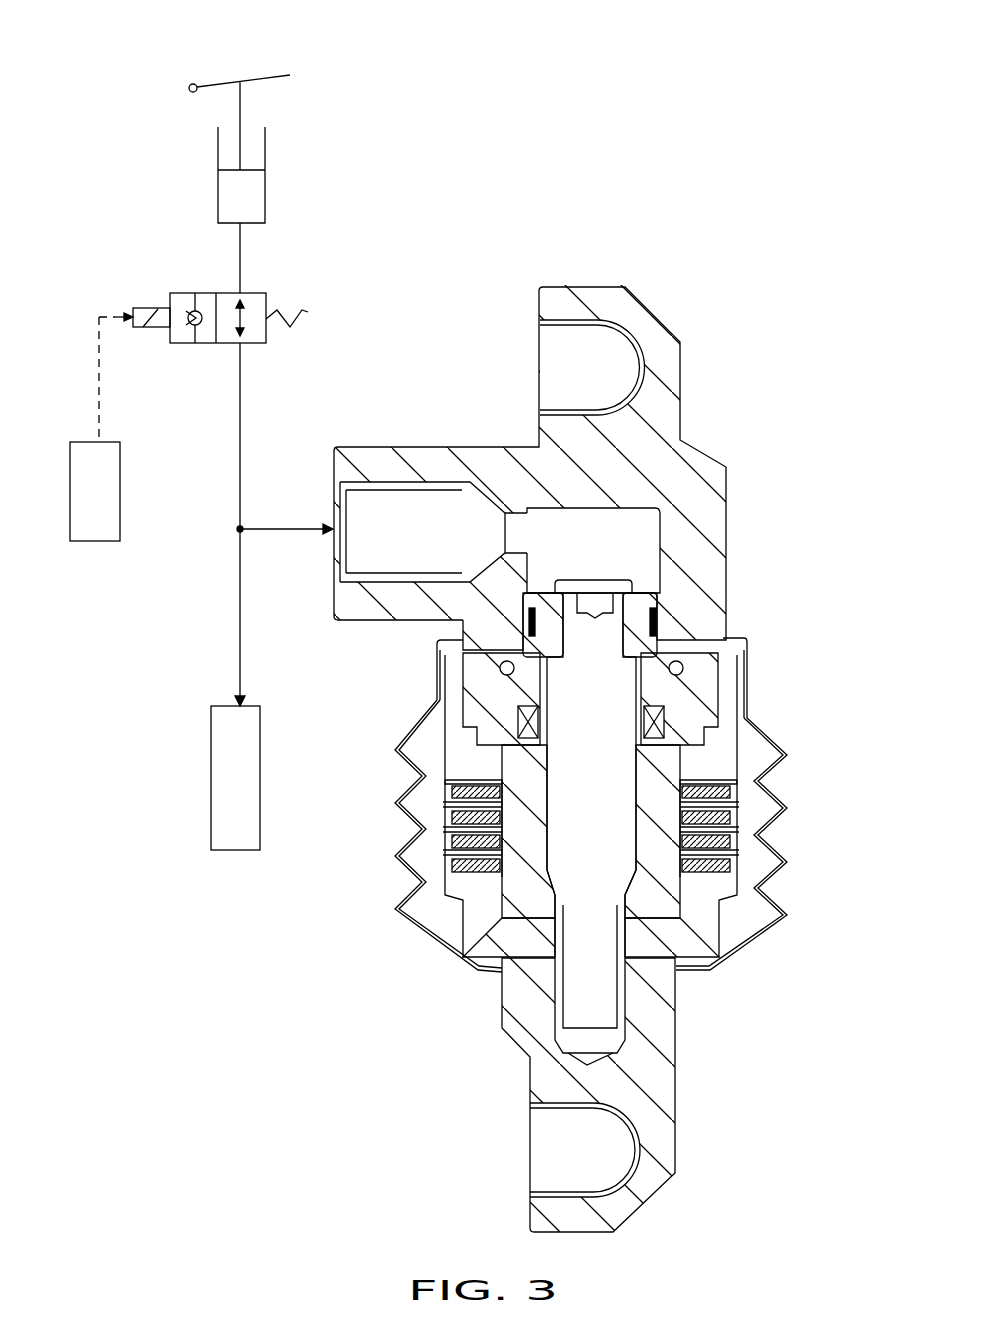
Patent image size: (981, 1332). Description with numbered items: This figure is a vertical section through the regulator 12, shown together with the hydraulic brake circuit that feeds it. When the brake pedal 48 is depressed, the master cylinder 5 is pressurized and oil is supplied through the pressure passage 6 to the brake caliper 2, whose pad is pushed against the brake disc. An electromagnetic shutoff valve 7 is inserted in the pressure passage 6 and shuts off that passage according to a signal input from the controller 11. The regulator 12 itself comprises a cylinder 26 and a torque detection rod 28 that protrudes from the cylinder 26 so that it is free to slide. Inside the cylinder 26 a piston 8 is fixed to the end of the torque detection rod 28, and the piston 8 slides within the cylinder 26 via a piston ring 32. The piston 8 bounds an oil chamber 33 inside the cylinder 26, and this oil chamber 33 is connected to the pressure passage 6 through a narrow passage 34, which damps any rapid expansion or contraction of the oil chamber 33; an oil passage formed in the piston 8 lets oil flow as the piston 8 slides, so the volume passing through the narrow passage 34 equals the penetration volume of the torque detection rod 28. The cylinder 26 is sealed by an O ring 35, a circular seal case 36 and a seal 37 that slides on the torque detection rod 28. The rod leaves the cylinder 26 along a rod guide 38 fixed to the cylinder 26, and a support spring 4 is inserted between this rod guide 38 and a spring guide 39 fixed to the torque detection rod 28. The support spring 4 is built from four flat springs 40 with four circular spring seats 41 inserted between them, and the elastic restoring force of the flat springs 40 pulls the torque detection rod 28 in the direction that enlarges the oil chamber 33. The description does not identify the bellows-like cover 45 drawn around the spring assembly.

The brake caliper 2 is at (210, 790).
The support spring 4 is at (641, 836).
The master cylinder 5 is at (218, 195).
The pressure passage 6 is at (244, 421).
The electromagnetic shutoff valve 7 is at (207, 293).
The piston 8 is at (658, 637).
The controller 11 is at (97, 541).
The regulator 12 is at (780, 727).
The cylinder 26 is at (726, 493).
The torque detection rod 28 is at (600, 1005).
The piston ring 32 is at (655, 625).
The oil chamber 33 is at (645, 555).
The narrow passage 34 is at (517, 523).
The O ring 35 is at (683, 672).
The circular seal case 36 is at (660, 703).
The seal 37 is at (690, 762).
The rod guide 38 is at (714, 937).
The spring guide 39 is at (722, 920).
The flat springs 40 is at (735, 842).
The circular spring seats 41 is at (738, 805).
The bellows 45 is at (398, 857).
The brake pedal 48 is at (290, 75).